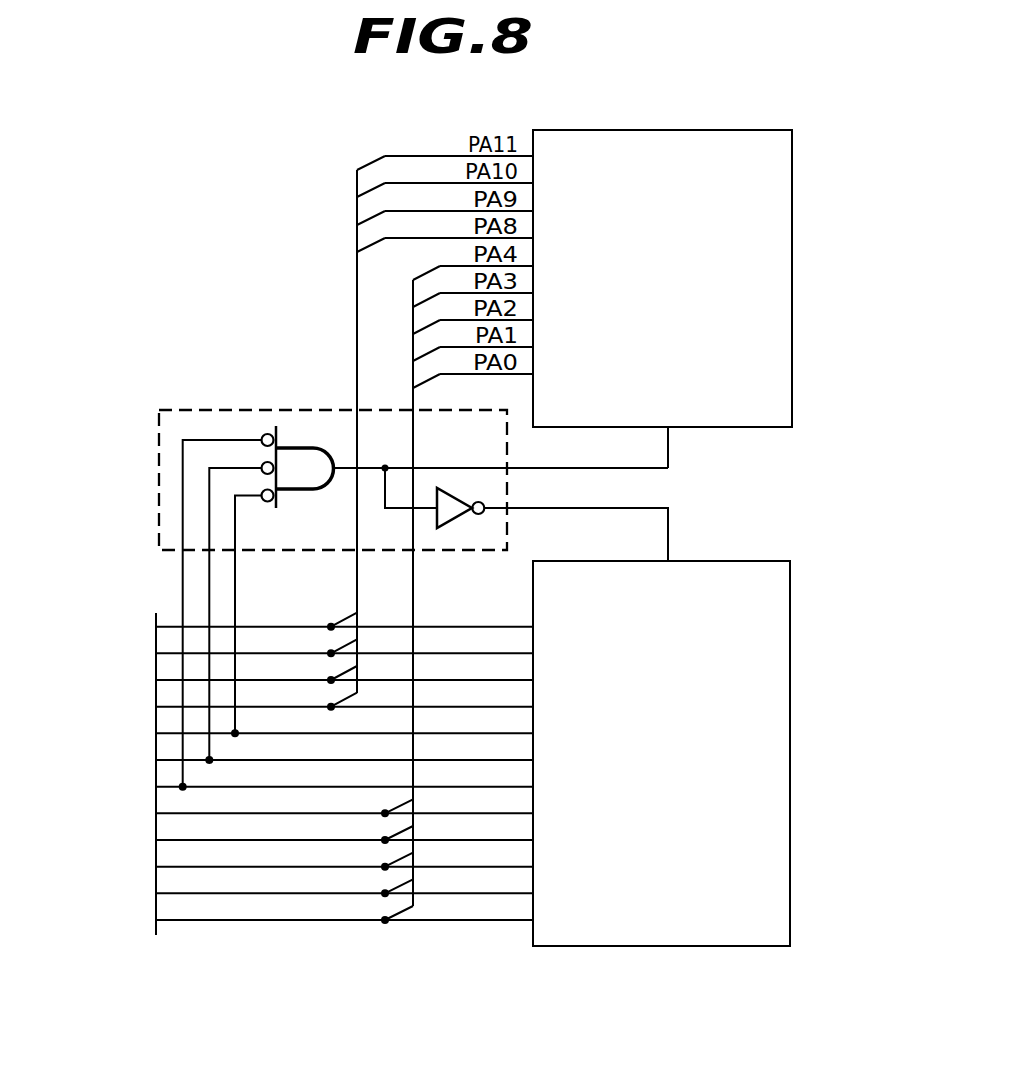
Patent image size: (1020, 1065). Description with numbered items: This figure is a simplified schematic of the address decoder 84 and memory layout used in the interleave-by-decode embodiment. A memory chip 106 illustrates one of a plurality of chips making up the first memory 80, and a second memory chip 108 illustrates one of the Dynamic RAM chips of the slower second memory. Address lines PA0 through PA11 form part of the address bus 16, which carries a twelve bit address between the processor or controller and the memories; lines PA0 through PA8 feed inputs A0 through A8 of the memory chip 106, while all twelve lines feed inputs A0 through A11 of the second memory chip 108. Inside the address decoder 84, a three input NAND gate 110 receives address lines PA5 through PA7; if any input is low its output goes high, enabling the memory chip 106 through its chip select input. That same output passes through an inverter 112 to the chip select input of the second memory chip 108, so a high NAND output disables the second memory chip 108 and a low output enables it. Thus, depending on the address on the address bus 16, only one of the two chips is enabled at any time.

The address bus 16 is at (88, 935).
The first memory 80 is at (792, 223).
The address decoder 84 is at (203, 408).
The memory chip 106 is at (792, 309).
The second memory chip 108 is at (790, 735).
The three input NAND gate 110 is at (315, 448).
The inverter 112 is at (457, 522).